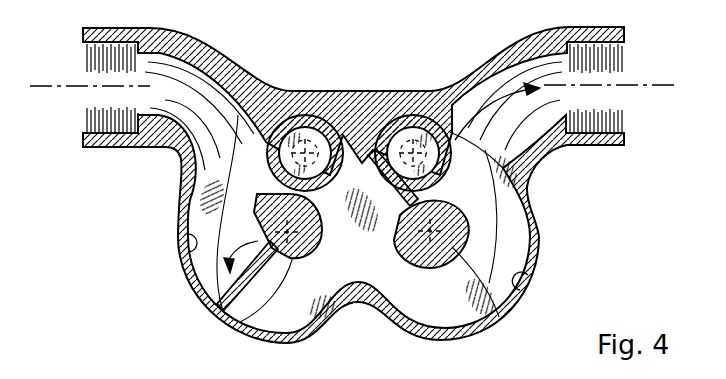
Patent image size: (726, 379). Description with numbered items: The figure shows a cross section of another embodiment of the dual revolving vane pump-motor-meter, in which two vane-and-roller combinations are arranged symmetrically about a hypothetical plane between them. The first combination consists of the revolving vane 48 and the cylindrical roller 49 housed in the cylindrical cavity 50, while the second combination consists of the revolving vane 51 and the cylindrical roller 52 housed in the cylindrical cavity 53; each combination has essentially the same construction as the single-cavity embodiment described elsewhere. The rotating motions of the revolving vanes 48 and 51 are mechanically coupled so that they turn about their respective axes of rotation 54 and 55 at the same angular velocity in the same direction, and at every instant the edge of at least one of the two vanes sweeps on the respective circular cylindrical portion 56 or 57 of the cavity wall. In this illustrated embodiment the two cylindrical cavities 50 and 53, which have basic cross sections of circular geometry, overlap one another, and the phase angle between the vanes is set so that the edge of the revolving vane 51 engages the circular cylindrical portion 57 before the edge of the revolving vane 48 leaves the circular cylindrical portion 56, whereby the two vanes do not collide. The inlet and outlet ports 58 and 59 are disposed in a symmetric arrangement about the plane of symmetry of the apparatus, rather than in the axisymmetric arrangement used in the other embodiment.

The revolving vane 48 is at (205, 275).
The cylindrical roller 49 is at (275, 138).
The cylindrical cavity 50 is at (187, 192).
The revolving vane 51 is at (470, 197).
The cylindrical roller 52 is at (405, 117).
The cylindrical cavity 53 is at (511, 243).
The axis of rotation 54 is at (255, 322).
The axis of rotation 55 is at (492, 318).
The circular cylindrical portion 56 is at (186, 240).
The circular cylindrical portion 57 is at (515, 277).
The inlet port 58 is at (200, 95).
The outlet port 59 is at (508, 92).